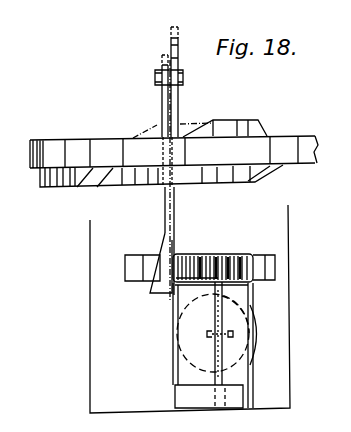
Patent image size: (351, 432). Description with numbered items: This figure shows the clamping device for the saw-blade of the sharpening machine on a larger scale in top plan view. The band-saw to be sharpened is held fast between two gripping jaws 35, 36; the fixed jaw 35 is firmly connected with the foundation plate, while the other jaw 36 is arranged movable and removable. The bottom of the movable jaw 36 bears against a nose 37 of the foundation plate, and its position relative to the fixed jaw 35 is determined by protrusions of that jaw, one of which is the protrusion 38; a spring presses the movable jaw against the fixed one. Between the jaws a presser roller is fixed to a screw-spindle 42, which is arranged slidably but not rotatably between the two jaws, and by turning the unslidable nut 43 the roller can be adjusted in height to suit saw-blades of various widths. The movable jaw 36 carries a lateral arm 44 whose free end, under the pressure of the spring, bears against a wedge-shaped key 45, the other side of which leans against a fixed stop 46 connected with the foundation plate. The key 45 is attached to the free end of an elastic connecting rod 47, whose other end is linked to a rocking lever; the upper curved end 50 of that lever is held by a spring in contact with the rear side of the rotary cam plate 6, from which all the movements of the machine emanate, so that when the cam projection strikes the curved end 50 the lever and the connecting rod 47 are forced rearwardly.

The rotary cam plate 6 is at (273, 145).
The upper curved end 50 is at (175, 106).
The elastic connecting rod 47 is at (165, 212).
The wedge-shaped key 45 is at (160, 300).
The fixed stop 46 is at (147, 268).
The lateral arm 44 is at (200, 254).
The nose 37 is at (271, 266).
The fixed gripping jaw 35 is at (213, 345).
The movable gripping jaw 36 is at (235, 314).
The unslidable nut 43 is at (262, 337).
The screw-spindle 42 is at (230, 338).
The protrusion 38 is at (243, 400).